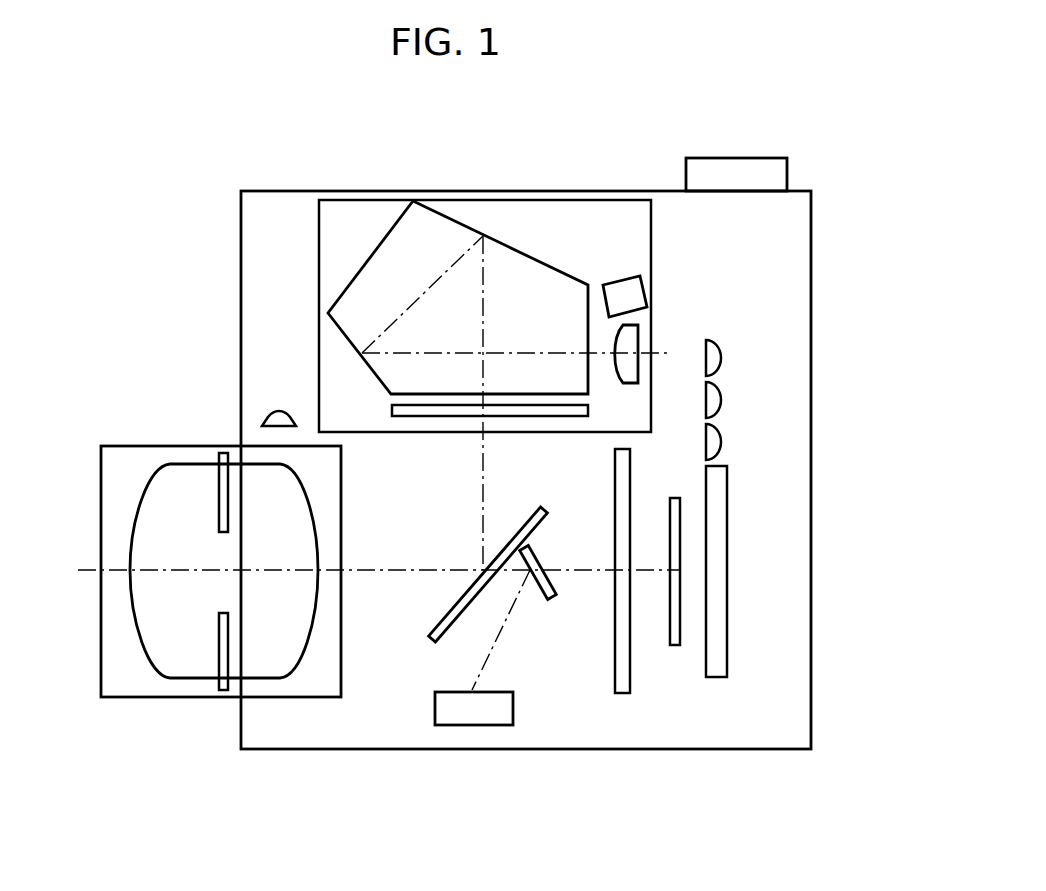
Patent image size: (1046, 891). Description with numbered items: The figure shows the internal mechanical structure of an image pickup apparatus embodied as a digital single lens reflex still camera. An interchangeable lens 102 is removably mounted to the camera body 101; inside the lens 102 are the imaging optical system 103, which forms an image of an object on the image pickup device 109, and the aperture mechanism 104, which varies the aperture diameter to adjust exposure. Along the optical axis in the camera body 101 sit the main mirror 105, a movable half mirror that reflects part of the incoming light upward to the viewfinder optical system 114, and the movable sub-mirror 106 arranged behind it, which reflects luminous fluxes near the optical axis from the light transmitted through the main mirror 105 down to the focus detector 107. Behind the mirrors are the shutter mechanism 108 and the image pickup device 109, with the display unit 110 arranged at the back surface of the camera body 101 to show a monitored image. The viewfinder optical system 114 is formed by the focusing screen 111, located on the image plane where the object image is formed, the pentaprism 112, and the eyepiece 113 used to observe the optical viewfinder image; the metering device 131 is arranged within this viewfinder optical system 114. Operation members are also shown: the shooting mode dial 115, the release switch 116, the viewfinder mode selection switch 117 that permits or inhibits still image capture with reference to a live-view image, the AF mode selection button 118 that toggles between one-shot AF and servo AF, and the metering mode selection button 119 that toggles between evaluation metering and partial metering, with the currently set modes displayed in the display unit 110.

The camera body 101 is at (337, 752).
The interchangeable lens 102 is at (125, 697).
The imaging optical system 103 is at (258, 678).
The aperture mechanism 104 is at (219, 685).
The main mirror 105 is at (430, 640).
The sub-mirror 106 is at (553, 600).
The focus detector 107 is at (474, 725).
The shutter mechanism 108 is at (630, 682).
The image pickup device 109 is at (683, 633).
The display unit 110 is at (727, 563).
The focusing screen 111 is at (392, 410).
The pentaprism 112 is at (517, 250).
The eyepiece 113 is at (642, 340).
The viewfinder optical system 114 is at (582, 200).
The shooting mode dial 115 is at (729, 158).
The release switch 116 is at (274, 416).
The viewfinder mode selection switch 117 is at (721, 437).
The AF mode selection button 118 is at (721, 395).
The metering mode selection button 119 is at (721, 354).
The metering device 131 is at (650, 287).